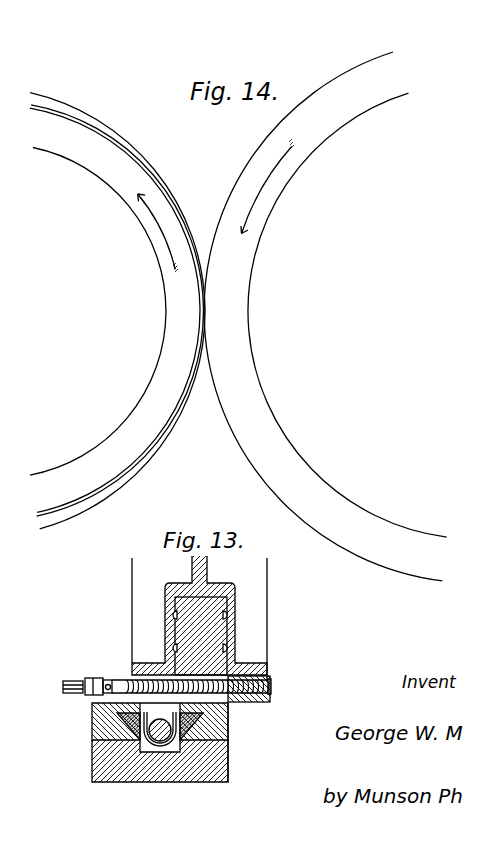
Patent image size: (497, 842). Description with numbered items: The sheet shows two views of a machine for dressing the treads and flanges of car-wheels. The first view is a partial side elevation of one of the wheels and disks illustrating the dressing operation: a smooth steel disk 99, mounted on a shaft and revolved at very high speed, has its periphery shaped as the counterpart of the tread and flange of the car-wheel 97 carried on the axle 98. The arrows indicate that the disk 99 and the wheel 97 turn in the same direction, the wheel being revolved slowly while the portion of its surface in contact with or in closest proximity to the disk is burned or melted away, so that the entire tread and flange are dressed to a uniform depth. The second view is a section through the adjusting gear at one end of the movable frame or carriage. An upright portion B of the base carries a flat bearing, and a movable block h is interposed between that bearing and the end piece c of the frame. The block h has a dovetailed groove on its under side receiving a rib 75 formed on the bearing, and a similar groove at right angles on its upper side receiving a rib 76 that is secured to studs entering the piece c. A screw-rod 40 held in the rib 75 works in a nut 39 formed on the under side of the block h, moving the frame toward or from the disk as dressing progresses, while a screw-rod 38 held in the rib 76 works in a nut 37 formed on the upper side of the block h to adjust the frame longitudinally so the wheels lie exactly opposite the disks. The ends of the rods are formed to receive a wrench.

In FIG. 14, the car-wheel 97 is at (167, 303).
In FIG. 14, the disk 99 is at (250, 313).
In FIG. 13, the axle 98 is at (230, 626).
In FIG. 13, the nut 37 is at (148, 678).
In FIG. 13, the screw-rod 38 is at (70, 684).
In FIG. 13, the rib 76 is at (252, 699).
In FIG. 13, the rib 75 is at (120, 718).
In FIG. 13, the nut 39 is at (152, 742).
In FIG. 13, the screw-rod 40 is at (161, 736).
In FIG. 13, the end piece c is at (199, 620).
In FIG. 13, the movable block h is at (228, 734).
In FIG. 13, the upright portion B is at (92, 762).